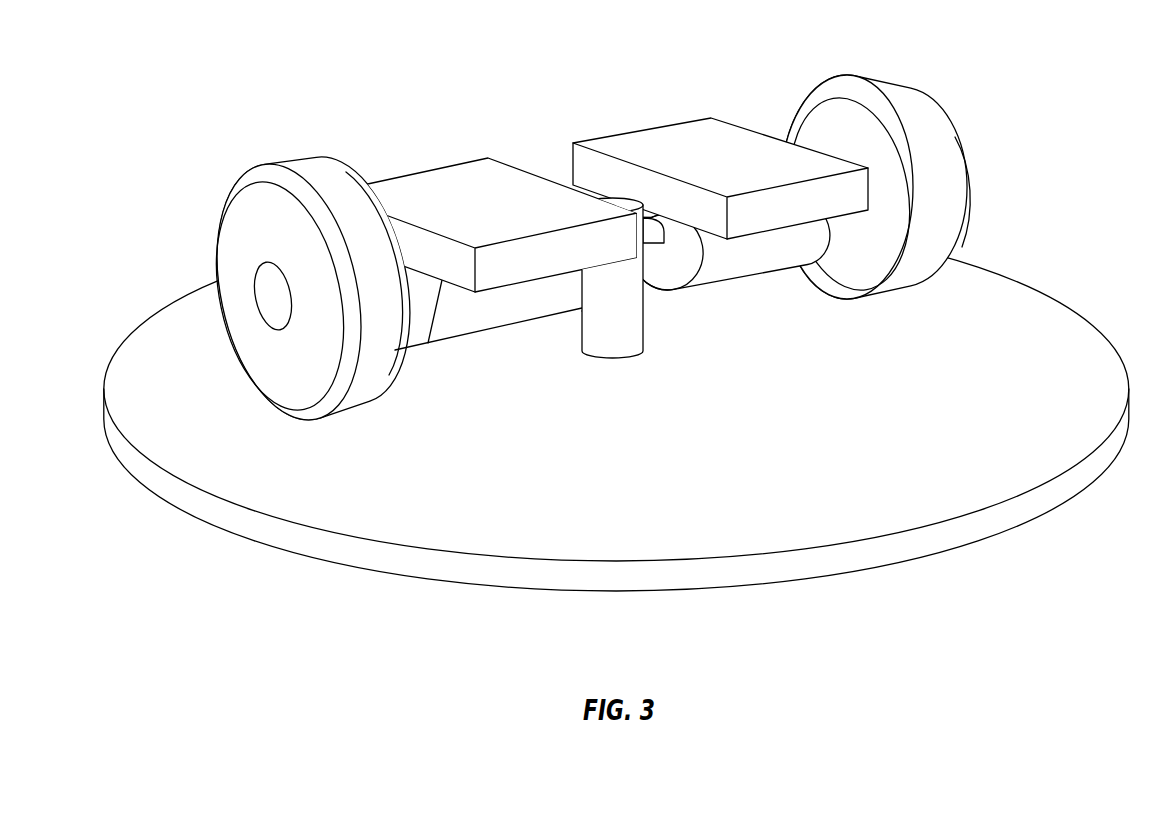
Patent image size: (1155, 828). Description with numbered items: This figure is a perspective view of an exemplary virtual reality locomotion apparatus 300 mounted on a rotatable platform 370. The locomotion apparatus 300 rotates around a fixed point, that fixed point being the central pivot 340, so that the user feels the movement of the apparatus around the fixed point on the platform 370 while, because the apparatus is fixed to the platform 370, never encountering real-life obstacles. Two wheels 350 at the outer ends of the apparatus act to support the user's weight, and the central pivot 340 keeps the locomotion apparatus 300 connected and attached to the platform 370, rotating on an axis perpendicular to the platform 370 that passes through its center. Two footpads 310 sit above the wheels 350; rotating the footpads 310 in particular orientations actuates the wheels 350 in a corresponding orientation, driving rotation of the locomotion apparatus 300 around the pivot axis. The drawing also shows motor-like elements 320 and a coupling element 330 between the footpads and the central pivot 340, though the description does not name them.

The locomotion apparatus 300 is at (617, 221).
The footpads 310 is at (678, 133).
The motor 320 is at (737, 262).
The shaft coupling 330 is at (650, 218).
The central pivot 340 is at (613, 348).
The wheels 350 is at (860, 78).
The platform 370 is at (1055, 345).